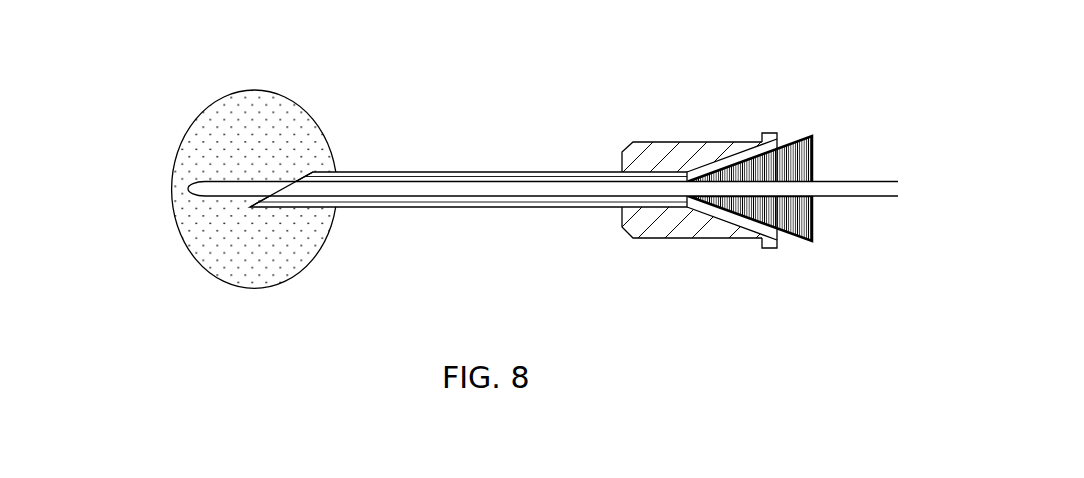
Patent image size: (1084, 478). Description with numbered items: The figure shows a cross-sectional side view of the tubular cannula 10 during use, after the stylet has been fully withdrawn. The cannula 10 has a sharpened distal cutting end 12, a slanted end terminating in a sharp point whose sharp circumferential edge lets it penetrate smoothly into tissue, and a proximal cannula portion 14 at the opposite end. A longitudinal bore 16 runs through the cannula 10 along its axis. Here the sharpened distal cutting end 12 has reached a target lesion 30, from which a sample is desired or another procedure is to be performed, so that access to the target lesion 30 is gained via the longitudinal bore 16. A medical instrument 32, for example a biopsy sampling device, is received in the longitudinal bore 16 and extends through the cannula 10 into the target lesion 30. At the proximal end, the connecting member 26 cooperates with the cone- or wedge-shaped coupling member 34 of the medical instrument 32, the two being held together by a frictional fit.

The cannula 10 is at (534, 161).
The sharpened distal cutting end 12 is at (285, 155).
The proximal cannula portion 14 is at (708, 148).
The longitudinal bore 16 is at (477, 200).
The connecting member 26 is at (765, 242).
The target lesion 30 is at (255, 190).
The medical instrument 32 is at (470, 188).
The coupling member 34 is at (800, 162).